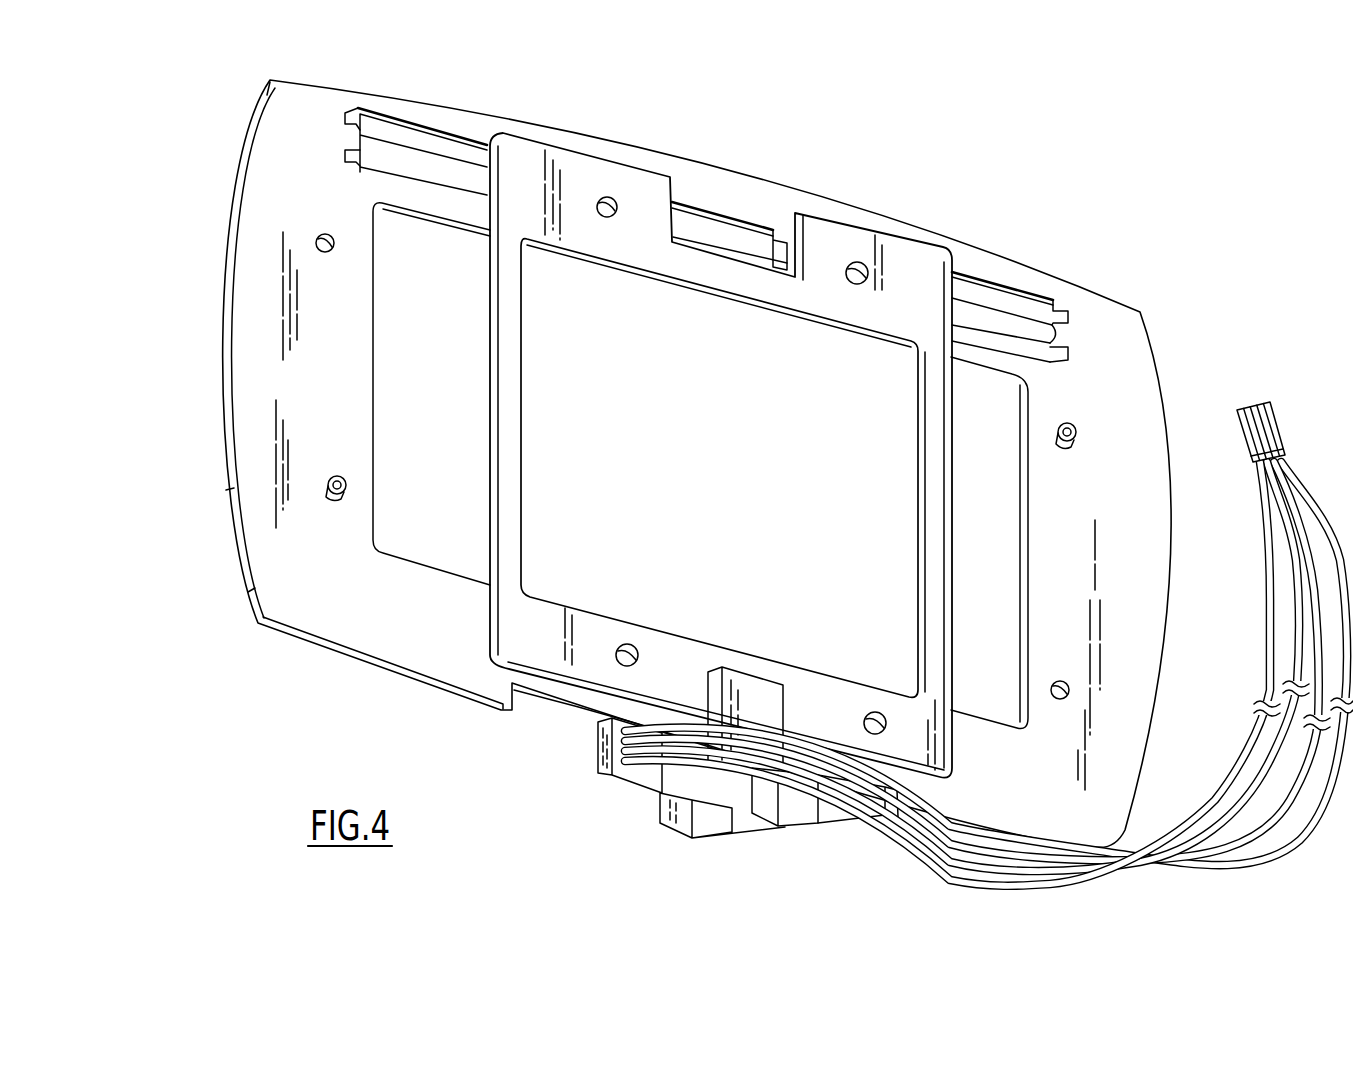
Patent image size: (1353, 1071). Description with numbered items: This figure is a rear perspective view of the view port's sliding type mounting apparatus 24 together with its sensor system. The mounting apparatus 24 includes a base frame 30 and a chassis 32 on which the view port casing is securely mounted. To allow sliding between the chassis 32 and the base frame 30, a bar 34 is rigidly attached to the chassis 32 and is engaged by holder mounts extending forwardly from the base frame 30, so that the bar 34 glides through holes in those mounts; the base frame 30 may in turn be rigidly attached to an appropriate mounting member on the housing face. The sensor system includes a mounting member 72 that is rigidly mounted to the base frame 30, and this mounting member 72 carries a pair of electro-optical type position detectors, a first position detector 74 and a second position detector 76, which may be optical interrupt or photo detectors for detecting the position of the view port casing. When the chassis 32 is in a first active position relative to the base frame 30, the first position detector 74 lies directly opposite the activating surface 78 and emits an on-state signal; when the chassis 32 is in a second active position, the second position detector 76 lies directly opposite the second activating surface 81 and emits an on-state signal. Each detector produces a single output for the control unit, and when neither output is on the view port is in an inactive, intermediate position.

The mounting apparatus 24 is at (1143, 309).
The base frame 30 is at (583, 158).
The chassis 32 is at (250, 352).
The bar 34 is at (974, 303).
The mounting member 72 is at (660, 778).
The first position detector 74 is at (683, 808).
The second position detector 76 is at (797, 827).
The activating surface 78 is at (482, 690).
The second activating surface 81 is at (898, 812).